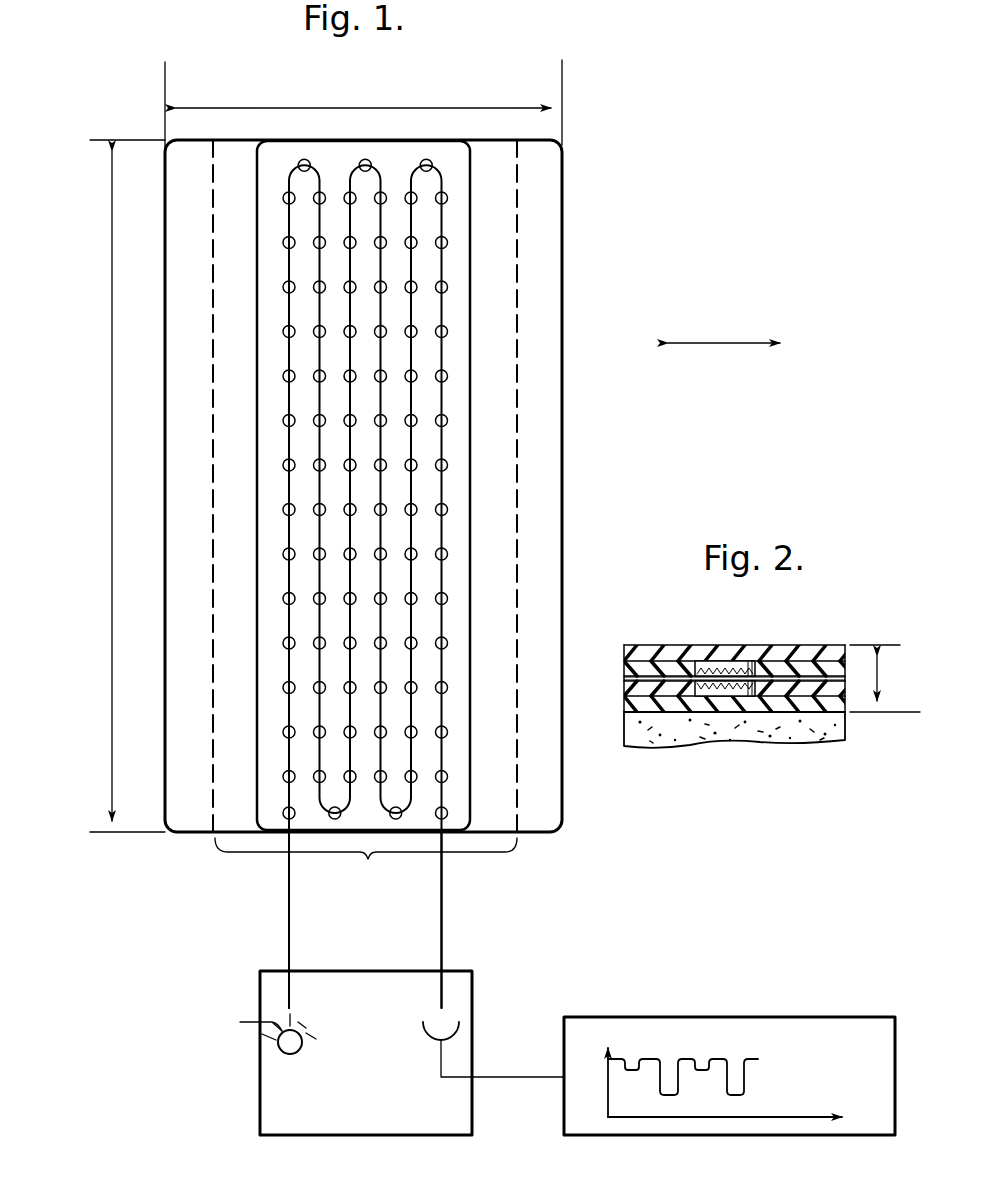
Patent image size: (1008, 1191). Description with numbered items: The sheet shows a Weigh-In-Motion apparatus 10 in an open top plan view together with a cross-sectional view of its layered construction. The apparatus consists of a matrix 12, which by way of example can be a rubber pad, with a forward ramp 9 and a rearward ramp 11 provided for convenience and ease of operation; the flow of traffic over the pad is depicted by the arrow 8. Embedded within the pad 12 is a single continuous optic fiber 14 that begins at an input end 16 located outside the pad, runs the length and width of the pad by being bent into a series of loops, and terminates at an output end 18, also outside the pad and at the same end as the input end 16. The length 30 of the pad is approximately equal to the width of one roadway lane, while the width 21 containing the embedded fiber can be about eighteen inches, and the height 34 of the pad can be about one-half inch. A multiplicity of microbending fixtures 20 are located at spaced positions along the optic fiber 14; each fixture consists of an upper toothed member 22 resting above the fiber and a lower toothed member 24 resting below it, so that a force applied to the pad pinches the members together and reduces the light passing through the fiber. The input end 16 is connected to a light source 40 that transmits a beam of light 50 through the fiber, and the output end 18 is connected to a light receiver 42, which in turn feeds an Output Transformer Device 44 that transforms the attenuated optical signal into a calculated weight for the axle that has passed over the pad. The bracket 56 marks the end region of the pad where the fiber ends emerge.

In FIG. 1, the arrow 8 is at (722, 343).
In FIG. 1, the forward ramp 9 is at (542, 522).
In FIG. 1, the Weigh-In-Motion apparatus 10 is at (590, 268).
In FIG. 1, the rearward ramp 11 is at (182, 278).
In FIG. 1, the matrix 12 is at (457, 775).
In FIG. 2, the matrix 12 is at (658, 712).
In FIG. 1, the optic fiber 14 is at (411, 405).
In FIG. 2, the optic fiber 14 is at (662, 657).
In FIG. 1, the input end 16 is at (289, 913).
In FIG. 1, the output end 18 is at (442, 931).
In FIG. 1, the microbending fixture 20 is at (411, 515).
In FIG. 2, the microbending fixture 20 is at (762, 666).
In FIG. 1, the width 21 is at (345, 107).
In FIG. 2, the upper toothed member 22 is at (727, 661).
In FIG. 2, the lower toothed member 24 is at (722, 696).
In FIG. 1, the length 30 is at (112, 417).
In FIG. 2, the height 34 is at (880, 672).
In FIG. 1, the light source 40 is at (300, 1045).
In FIG. 1, the light receiver 42 is at (456, 1034).
In FIG. 1, the Output Transformer Device 44 is at (859, 1064).
In FIG. 1, the beam of light 50 is at (245, 1023).
In FIG. 1, the terminal region bracket 56 is at (368, 859).